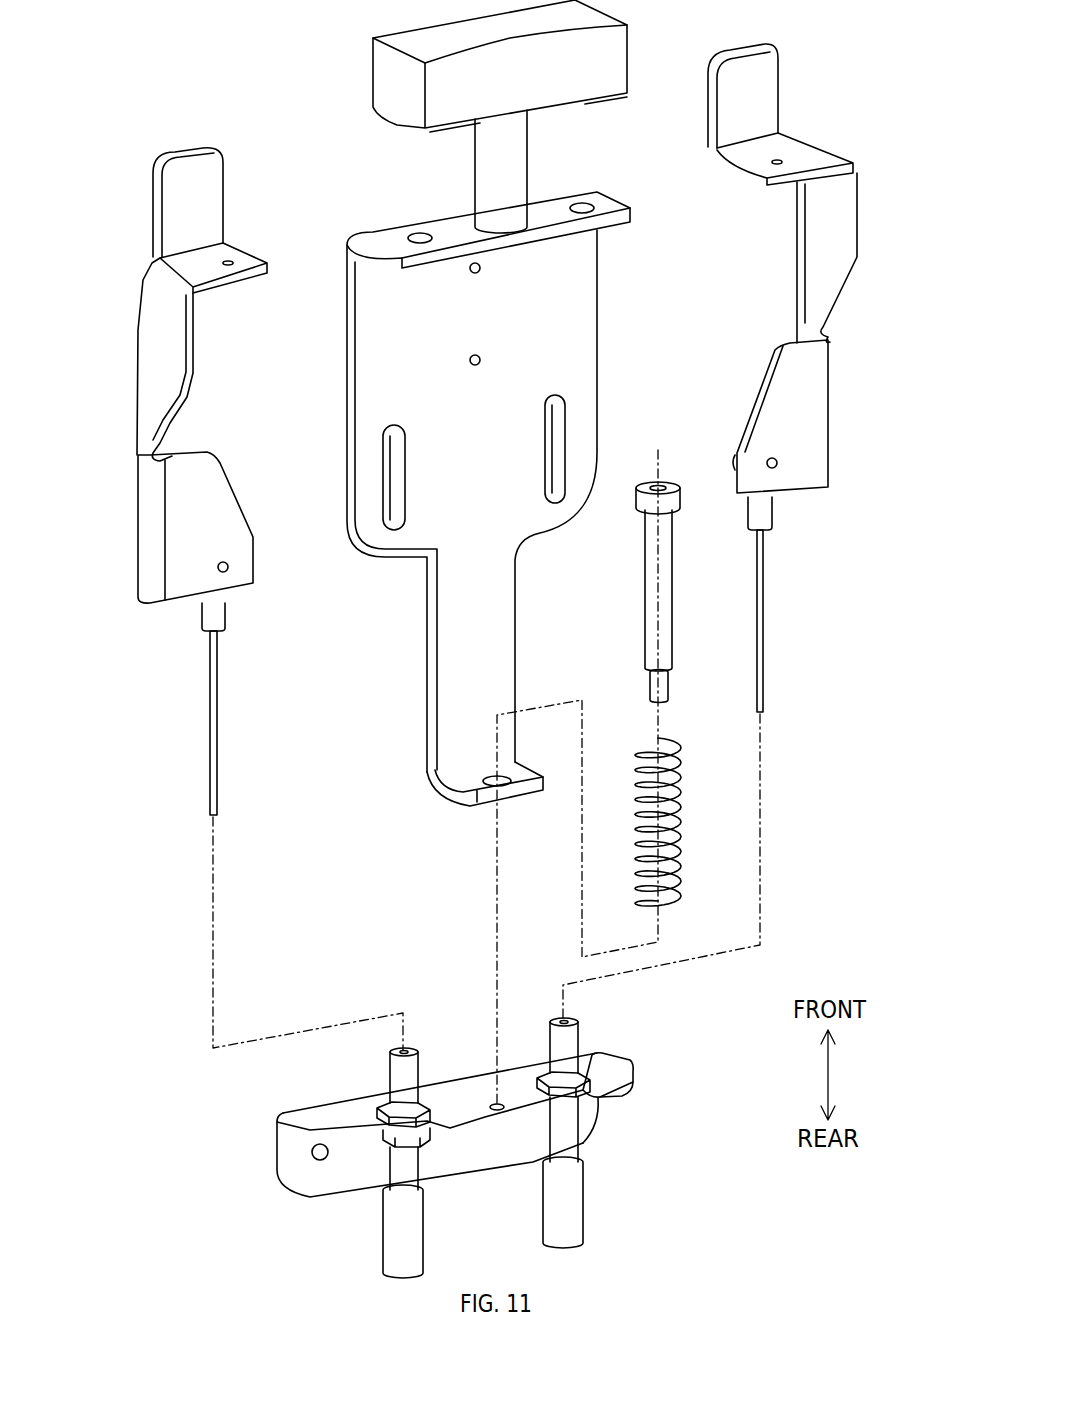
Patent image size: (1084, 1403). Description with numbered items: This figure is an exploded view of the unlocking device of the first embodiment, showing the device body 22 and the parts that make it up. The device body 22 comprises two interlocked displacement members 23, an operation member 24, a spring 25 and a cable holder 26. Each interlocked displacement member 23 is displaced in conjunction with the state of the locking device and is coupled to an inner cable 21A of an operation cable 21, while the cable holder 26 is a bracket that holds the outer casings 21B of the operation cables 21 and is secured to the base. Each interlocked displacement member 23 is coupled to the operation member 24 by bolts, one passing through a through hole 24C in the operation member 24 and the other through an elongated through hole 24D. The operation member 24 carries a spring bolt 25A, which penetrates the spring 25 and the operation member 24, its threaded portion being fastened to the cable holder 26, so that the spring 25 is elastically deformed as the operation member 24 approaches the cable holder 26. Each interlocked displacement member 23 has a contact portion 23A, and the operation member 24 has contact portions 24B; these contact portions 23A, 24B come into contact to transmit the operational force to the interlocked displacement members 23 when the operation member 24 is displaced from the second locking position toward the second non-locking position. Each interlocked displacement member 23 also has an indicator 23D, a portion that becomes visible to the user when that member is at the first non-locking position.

The device body 22 is at (176, 27).
The operation member 24 is at (606, 12).
The contact portion 24B is at (386, 238).
The through hole 24C is at (420, 236).
The elongated through hole 24D is at (386, 466).
The interlocked displacement member 23 is at (150, 360).
The indicator 23D is at (175, 182).
The contact portion 23A is at (243, 290).
The operation cable 21 is at (486, 887).
The inner cable 21A is at (210, 712).
The outer casing 21B is at (384, 1226).
The spring 25 is at (684, 790).
The spring bolt 25A is at (676, 600).
The cable holder 26 is at (615, 1067).